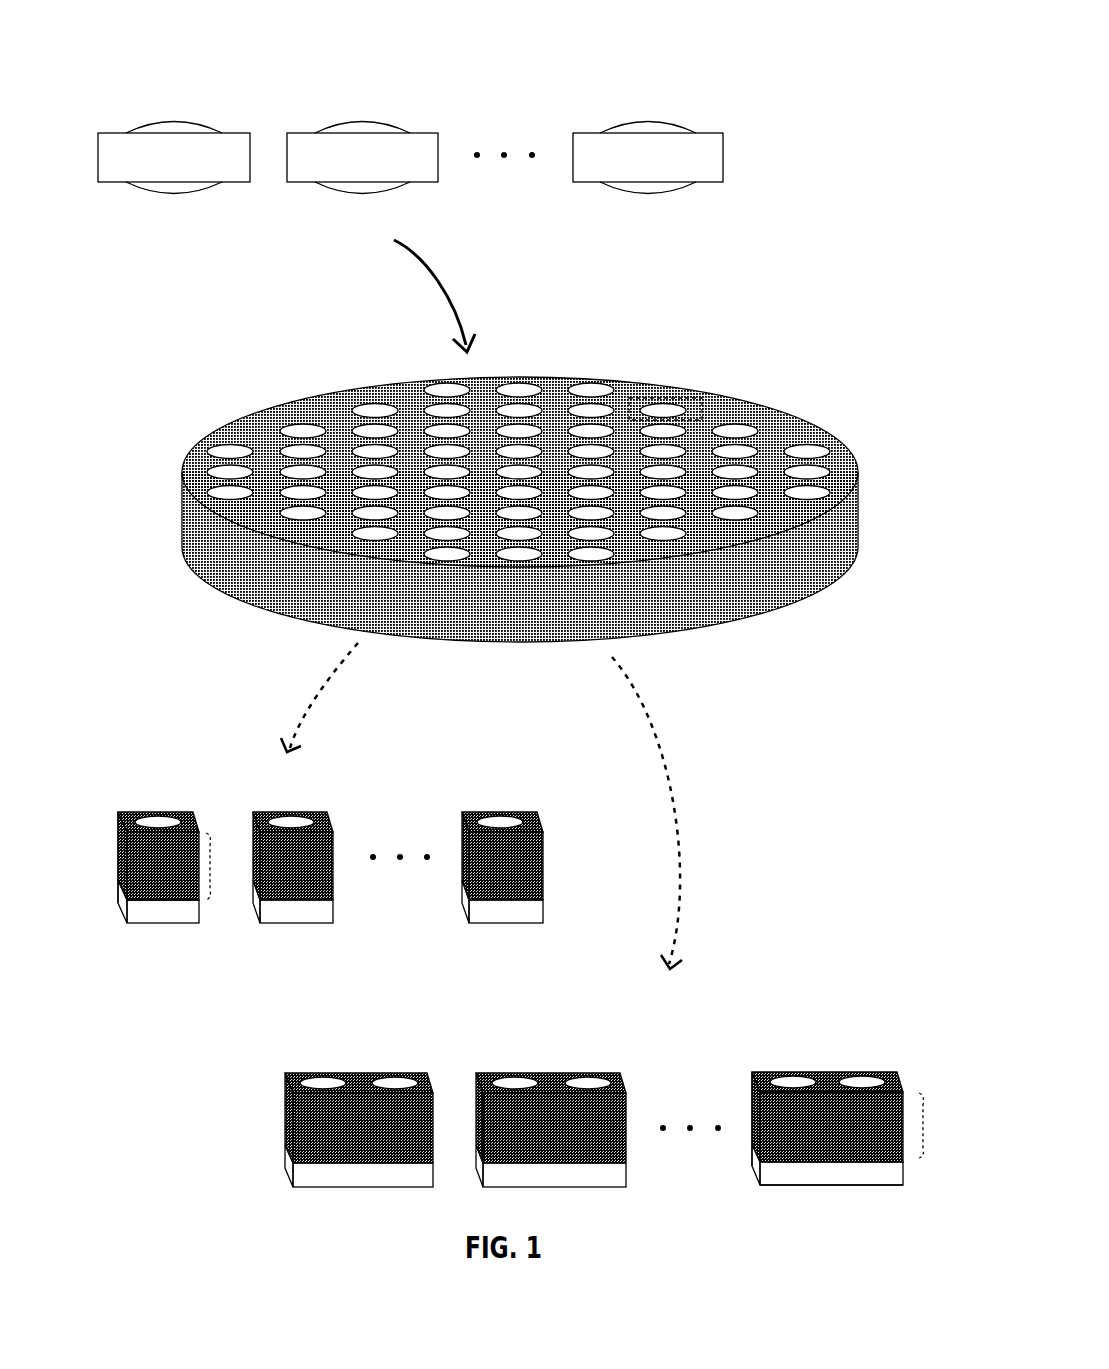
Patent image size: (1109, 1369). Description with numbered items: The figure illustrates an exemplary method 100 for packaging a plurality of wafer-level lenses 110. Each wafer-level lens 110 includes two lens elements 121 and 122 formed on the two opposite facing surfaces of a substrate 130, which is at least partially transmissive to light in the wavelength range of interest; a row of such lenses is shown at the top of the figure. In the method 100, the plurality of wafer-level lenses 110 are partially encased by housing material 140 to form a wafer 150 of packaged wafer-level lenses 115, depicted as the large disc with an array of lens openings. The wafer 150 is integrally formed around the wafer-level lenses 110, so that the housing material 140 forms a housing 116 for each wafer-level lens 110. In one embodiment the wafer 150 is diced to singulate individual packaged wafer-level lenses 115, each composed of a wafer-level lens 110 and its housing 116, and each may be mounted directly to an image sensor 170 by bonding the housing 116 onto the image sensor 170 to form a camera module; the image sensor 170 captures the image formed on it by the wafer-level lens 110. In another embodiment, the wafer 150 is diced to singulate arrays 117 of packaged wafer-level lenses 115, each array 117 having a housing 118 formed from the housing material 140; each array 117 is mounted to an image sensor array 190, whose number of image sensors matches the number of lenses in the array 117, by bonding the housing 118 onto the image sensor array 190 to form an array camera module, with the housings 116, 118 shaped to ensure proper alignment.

The method for packaging a plurality of wafer-level lenses 100 is at (852, 56).
The wafer-level lens 110 is at (668, 397).
The lens element 121 is at (195, 122).
The lens element 122 is at (130, 194).
The substrate 130 is at (240, 184).
The wafer 150 is at (812, 360).
The housing material 140 is at (182, 518).
The packaged wafer-level lens 115 is at (645, 398).
The housing 116 is at (120, 855).
The image sensor 170 is at (121, 912).
The housing 118 is at (758, 1098).
The array of packaged wafer-level lenses 117 is at (923, 1125).
The image sensor array 190 is at (860, 1188).